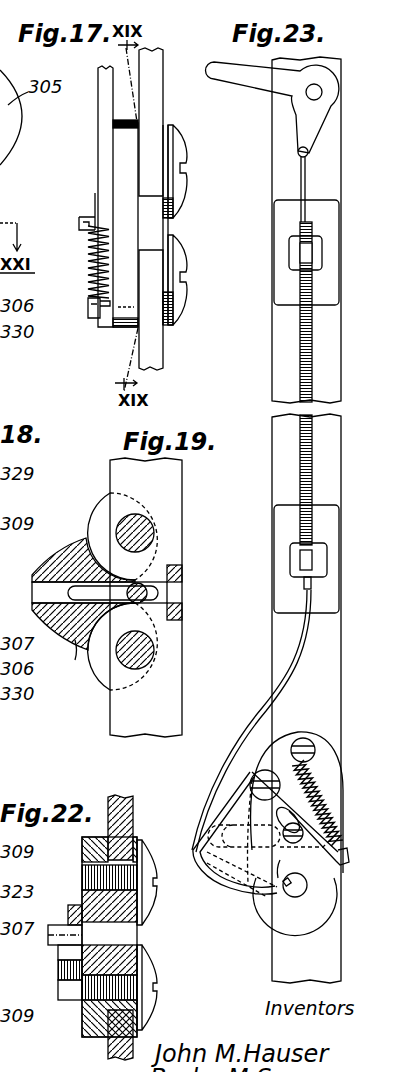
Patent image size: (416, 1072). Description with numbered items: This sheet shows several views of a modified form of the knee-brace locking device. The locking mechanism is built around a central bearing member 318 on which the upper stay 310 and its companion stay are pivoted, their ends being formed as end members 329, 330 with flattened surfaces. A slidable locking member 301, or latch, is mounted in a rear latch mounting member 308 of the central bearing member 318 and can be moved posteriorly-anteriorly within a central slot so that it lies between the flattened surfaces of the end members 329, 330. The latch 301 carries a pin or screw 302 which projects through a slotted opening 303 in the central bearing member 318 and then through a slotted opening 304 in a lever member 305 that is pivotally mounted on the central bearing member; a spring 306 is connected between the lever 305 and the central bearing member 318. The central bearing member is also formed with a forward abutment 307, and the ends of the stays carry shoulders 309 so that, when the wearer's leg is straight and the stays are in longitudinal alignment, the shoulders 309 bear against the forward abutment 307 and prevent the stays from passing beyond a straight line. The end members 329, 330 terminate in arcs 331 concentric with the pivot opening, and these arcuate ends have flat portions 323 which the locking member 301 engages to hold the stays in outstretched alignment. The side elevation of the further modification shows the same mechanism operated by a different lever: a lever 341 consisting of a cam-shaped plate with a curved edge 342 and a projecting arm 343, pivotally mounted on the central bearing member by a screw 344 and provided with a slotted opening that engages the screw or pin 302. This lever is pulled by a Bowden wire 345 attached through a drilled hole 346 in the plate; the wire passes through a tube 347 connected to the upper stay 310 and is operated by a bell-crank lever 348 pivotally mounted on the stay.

In FIG. 19, the slidable locking member 301 is at (70, 658).
In FIG. 22, the slidable locking member 301 is at (140, 940).
In FIG. 17, the pin or screw 302 is at (93, 215).
In FIG. 23, the pin or screw 302 is at (260, 817).
In FIG. 19, the pin or screw 302 is at (183, 589).
In FIG. 22, the pin or screw 302 is at (68, 912).
In FIG. 22, the slotted opening 303 is at (72, 1000).
In FIG. 22, the slotted opening 304 is at (58, 950).
In FIG. 17, the lever member 305 is at (100, 108).
In FIG. 22, the lever member 305 is at (60, 975).
In FIG. 17, the spring 306 is at (90, 266).
In FIG. 17, the forward abutment 307 is at (140, 212).
In FIG. 19, the forward abutment 307 is at (180, 578).
In FIG. 19, the rear latch mounting member 308 is at (58, 568).
In FIG. 17, the shoulders 309 is at (152, 190).
In FIG. 19, the shoulders 309 is at (176, 553).
In FIG. 23, the stay 310 is at (274, 320).
In FIG. 17, the central bearing member 318 is at (137, 237).
In FIG. 19, the central bearing member 318 is at (60, 549).
In FIG. 22, the central bearing member 318 is at (77, 854).
In FIG. 19, the flat portions 323 is at (147, 586).
In FIG. 17, the end member 329 is at (157, 103).
In FIG. 19, the end member 329 is at (172, 477).
In FIG. 22, the end member 329 is at (125, 828).
In FIG. 17, the end member 330 is at (155, 346).
In FIG. 19, the end member 330 is at (112, 707).
In FIG. 22, the end member 330 is at (108, 1045).
In FIG. 19, the arcs 331 is at (96, 517).
In FIG. 23, the lever 341 is at (282, 895).
In FIG. 23, the curved edge 342 is at (215, 880).
In FIG. 23, the projecting arm 343 is at (335, 867).
In FIG. 23, the screw 344 is at (248, 772).
In FIG. 23, the Bowden wire 345 is at (247, 726).
In FIG. 23, the drilled hole 346 is at (205, 858).
In FIG. 23, the tube 347 is at (300, 372).
In FIG. 23, the bell-crank lever 348 is at (258, 85).